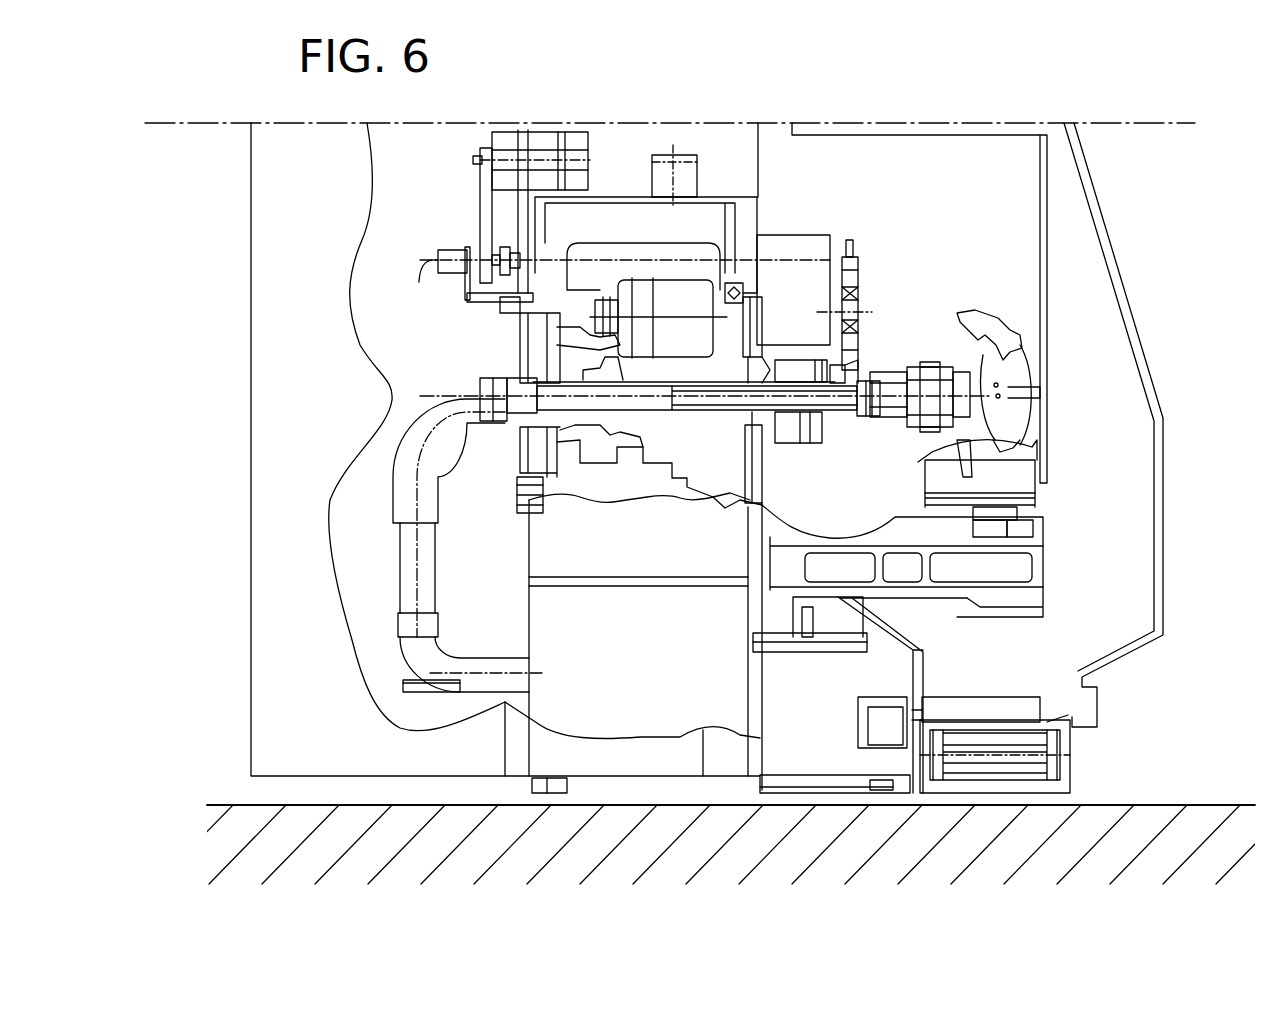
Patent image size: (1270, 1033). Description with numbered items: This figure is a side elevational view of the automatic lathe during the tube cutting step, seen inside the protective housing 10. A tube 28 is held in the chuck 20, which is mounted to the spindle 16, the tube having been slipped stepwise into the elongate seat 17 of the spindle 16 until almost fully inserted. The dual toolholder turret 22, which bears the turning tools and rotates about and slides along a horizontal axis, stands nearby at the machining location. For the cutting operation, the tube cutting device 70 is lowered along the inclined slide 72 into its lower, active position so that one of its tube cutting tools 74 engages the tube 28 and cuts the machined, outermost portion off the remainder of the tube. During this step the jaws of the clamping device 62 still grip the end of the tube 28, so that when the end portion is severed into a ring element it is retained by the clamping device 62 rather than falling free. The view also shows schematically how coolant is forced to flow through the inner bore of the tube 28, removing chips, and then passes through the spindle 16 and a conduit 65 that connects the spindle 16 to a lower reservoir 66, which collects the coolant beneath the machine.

The protective housing 10 is at (1135, 322).
The spindle 16 is at (758, 332).
The elongate seat 17 is at (598, 403).
The chuck 20 is at (808, 413).
The dual toolholder turret 22 is at (994, 306).
The tube 28 is at (685, 400).
The clamping device 62 is at (858, 422).
The conduit 65 is at (424, 545).
The lower reservoir 66 is at (557, 625).
The tube cutting device 70 is at (871, 272).
The inclined slide 72 is at (812, 248).
The tube cutting tool 74 is at (858, 374).